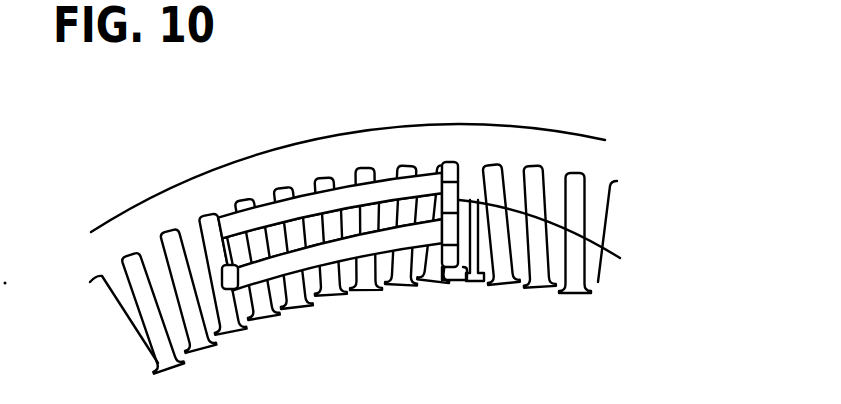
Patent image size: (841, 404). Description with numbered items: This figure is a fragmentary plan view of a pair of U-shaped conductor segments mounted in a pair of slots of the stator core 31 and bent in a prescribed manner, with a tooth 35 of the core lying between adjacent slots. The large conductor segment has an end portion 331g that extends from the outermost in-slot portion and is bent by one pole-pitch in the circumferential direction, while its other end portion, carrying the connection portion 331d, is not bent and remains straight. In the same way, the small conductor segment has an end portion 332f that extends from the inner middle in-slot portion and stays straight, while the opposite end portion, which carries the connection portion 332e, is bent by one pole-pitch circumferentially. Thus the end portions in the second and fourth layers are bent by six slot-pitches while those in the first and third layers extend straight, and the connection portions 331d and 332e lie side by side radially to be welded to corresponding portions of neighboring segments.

The stator core 31 is at (531, 147).
The tooth 35 is at (494, 172).
The end portion 331g is at (356, 203).
The connection portion 331d is at (457, 266).
The connection portion 332e is at (577, 253).
The end portion 332f is at (364, 252).